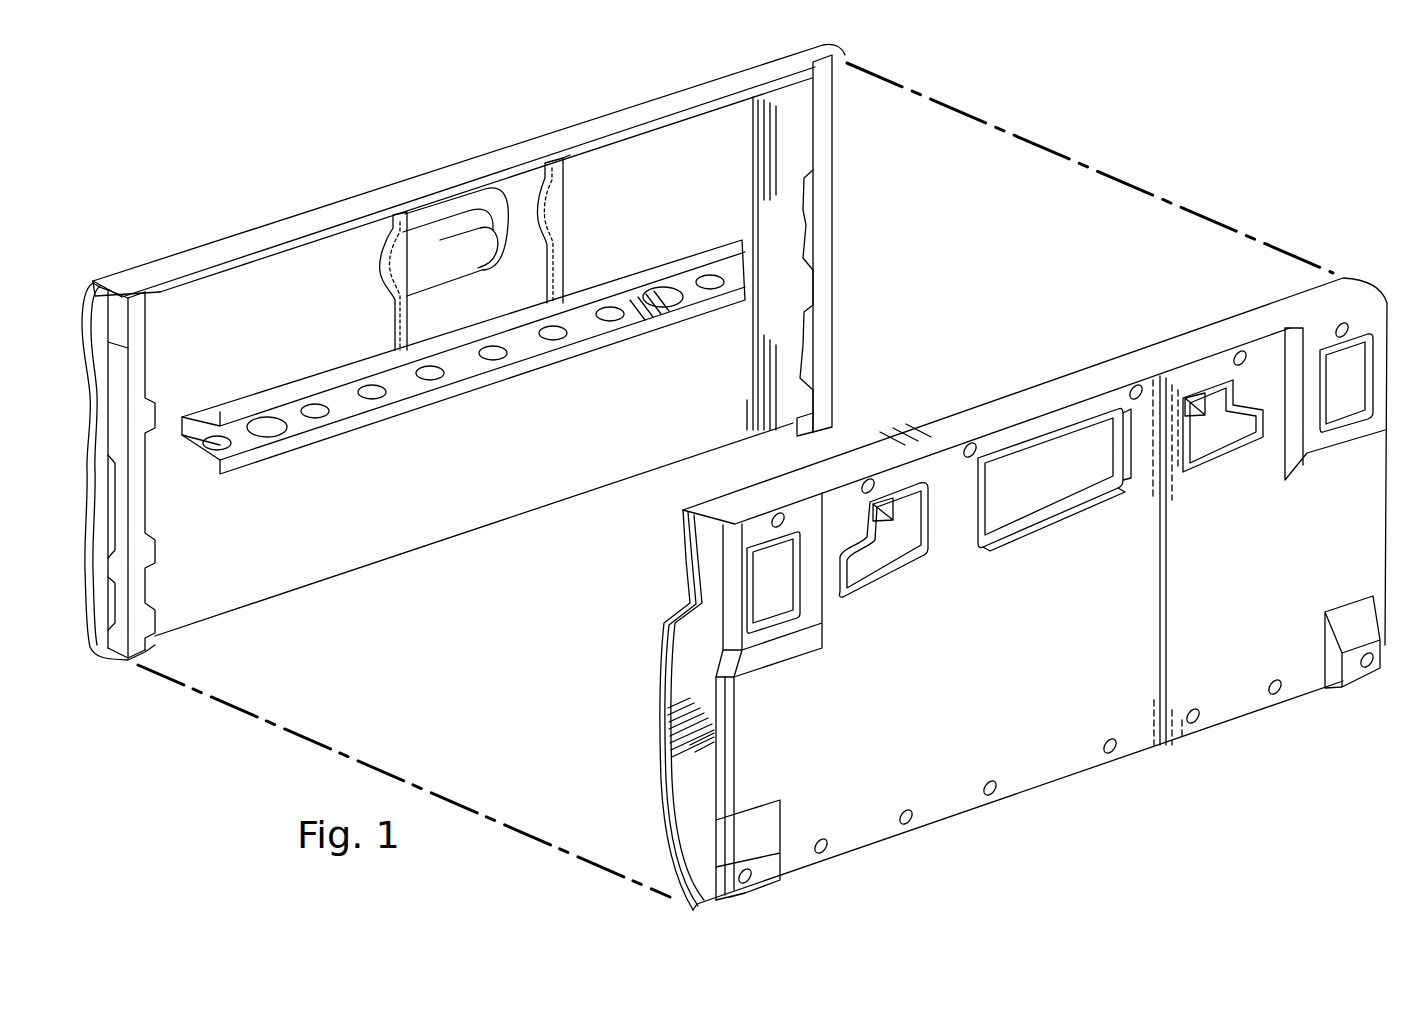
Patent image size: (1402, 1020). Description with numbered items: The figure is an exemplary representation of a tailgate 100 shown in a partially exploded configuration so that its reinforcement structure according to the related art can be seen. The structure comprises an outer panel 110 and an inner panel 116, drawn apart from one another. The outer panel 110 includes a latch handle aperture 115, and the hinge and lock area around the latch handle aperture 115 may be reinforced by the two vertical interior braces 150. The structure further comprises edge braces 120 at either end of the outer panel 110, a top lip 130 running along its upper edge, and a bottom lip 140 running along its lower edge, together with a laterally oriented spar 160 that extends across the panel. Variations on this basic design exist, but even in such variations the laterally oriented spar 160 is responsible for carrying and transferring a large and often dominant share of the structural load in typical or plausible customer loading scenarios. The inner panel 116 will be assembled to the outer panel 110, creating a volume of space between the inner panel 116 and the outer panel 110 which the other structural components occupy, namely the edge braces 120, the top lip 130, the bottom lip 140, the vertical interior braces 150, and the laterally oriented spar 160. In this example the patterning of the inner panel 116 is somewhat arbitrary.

The tailgate 100 is at (199, 95).
The outer panel 110 is at (665, 138).
The latch handle aperture 115 is at (493, 197).
The inner panel 116 is at (1221, 330).
The edge braces 120 is at (147, 577).
The top lip 130 is at (373, 193).
The bottom lip 140 is at (300, 588).
The vertical interior braces 150 is at (407, 277).
The laterally oriented spar 160 is at (663, 317).